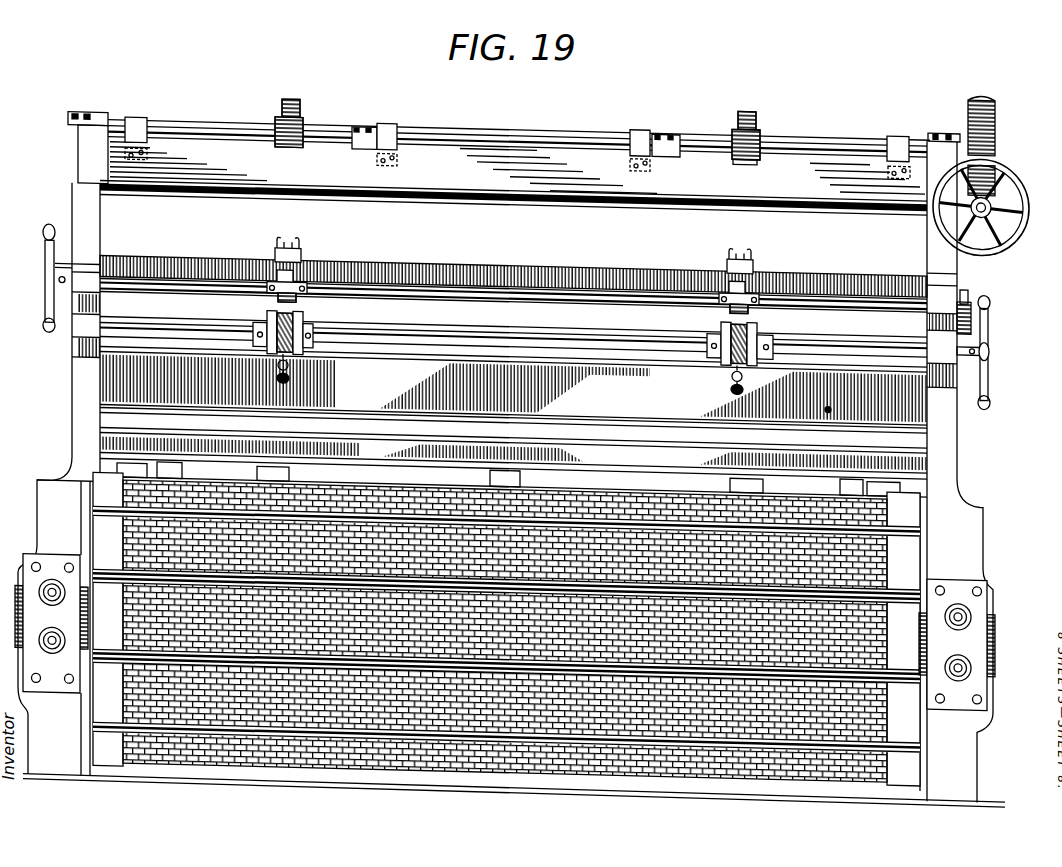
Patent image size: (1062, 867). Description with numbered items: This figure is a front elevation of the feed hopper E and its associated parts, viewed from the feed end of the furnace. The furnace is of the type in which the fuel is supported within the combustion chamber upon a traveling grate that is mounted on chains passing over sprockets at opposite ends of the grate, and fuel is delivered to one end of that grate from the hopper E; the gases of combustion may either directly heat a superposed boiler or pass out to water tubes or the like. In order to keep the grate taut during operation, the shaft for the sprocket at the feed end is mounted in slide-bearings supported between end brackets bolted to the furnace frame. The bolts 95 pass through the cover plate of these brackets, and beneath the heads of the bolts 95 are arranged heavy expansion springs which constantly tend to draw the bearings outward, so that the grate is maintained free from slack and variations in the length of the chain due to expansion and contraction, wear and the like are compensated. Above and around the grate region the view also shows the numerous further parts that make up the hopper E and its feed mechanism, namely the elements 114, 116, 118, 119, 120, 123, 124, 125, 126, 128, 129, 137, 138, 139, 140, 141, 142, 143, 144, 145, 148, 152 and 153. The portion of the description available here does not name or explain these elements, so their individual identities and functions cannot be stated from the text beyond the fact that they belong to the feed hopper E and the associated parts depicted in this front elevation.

The bolts 95 is at (962, 546).
The rack bar 114 is at (470, 253).
The guide clip 116 is at (283, 232).
The bearing block 118 is at (268, 286).
The shaft 119 is at (456, 289).
The hand lever 120 is at (44, 268).
The worm gear 123 is at (282, 99).
The gear bracket 124 is at (744, 144).
The rod 125 is at (546, 122).
The worm screw 126 is at (968, 82).
The hand wheel 128 is at (990, 178).
The hand wheel rim 129 is at (1018, 210).
The roller 137 is at (513, 387).
The lower roller 138 is at (640, 452).
The hook 139 is at (289, 378).
The gear 140 is at (758, 313).
The gear 141 is at (313, 318).
The shaft 142 is at (615, 325).
The lever 143 is at (990, 302).
The pinion 144 is at (970, 290).
The lever handle 145 is at (990, 347).
The cross bar 148 is at (513, 431).
The cross beam 152 is at (513, 177).
The slide block 153 is at (137, 114).
The hopper E is at (592, 236).